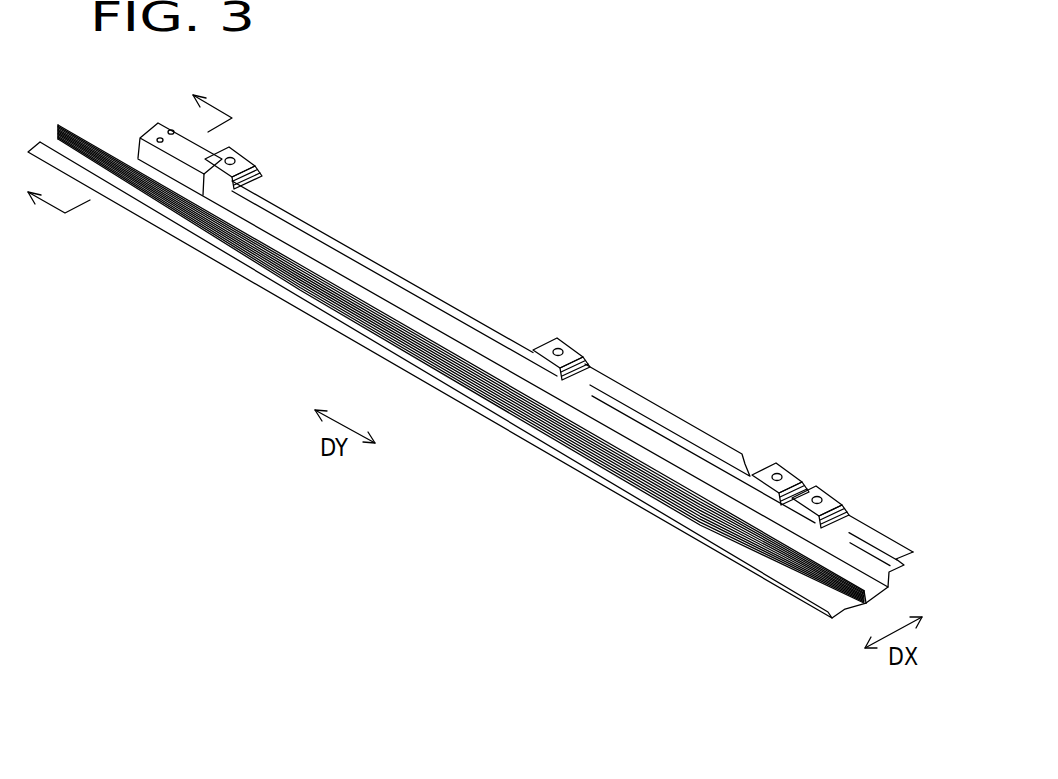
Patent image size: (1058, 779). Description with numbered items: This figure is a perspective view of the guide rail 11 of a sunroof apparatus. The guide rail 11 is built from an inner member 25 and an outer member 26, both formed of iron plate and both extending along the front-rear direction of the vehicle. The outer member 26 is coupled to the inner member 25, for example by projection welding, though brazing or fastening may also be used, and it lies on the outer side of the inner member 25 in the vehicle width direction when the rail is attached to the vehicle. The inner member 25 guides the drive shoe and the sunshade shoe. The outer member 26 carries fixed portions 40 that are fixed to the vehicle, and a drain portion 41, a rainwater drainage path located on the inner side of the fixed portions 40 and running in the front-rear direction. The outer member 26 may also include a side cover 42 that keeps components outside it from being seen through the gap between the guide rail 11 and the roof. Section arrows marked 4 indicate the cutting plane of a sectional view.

The section line IV-IV 4 is at (128, 157).
The guide rail 11 is at (470, 367).
The inner member 25 is at (288, 312).
The outer member 26 is at (438, 300).
The fixed portions 40 is at (238, 161).
The drain portion 41 is at (376, 301).
The side cover 42 is at (696, 427).